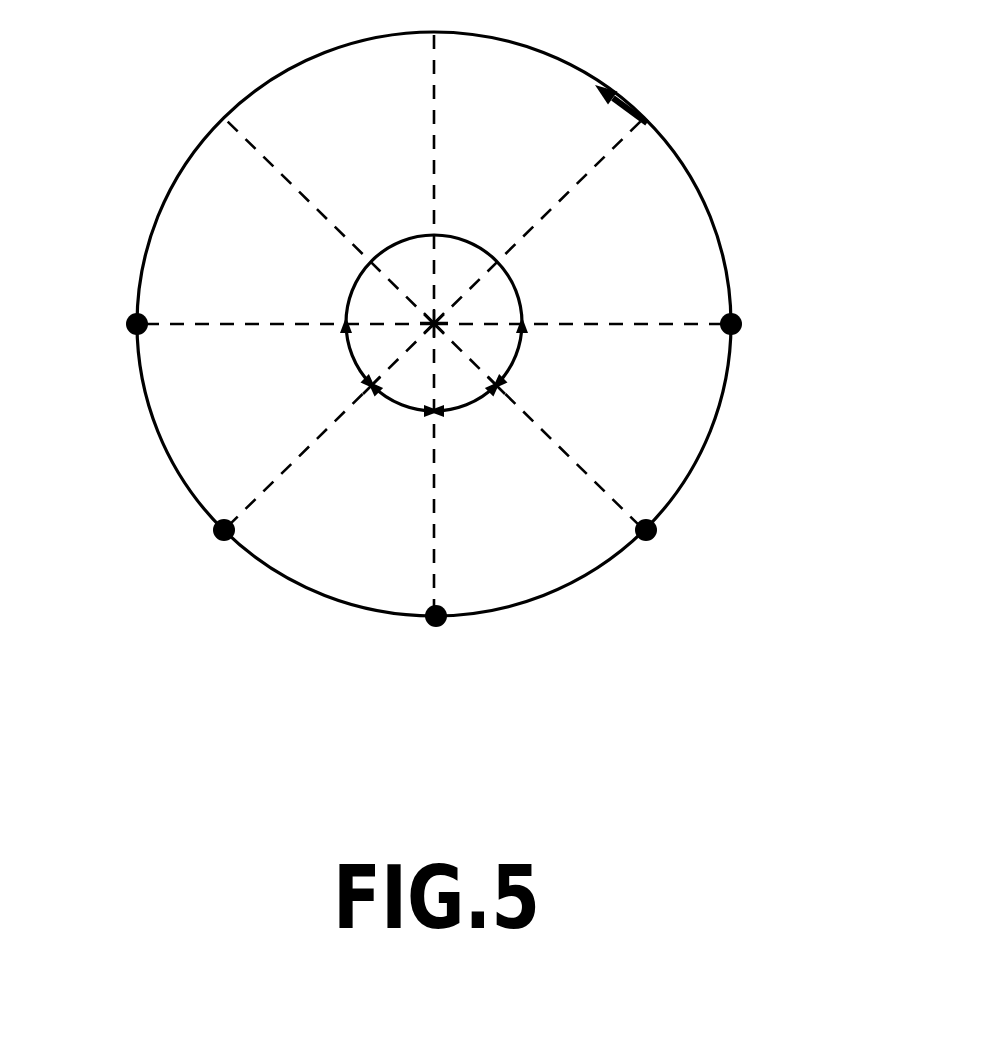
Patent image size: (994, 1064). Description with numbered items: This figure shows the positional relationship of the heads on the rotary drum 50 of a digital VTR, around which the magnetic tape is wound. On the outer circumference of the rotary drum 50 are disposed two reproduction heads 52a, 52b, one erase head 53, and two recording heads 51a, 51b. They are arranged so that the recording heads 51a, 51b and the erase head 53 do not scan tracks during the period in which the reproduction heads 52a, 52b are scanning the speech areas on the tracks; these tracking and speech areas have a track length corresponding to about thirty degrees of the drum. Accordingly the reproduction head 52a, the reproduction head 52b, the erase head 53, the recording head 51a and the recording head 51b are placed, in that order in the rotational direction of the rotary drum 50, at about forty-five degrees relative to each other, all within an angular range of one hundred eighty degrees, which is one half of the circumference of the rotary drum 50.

The rotary drum 50 is at (720, 238).
The recording head 51a is at (222, 540).
The recording head 51b is at (129, 331).
The reproduction head 52a is at (742, 326).
The reproduction head 52b is at (657, 534).
The erase head 53 is at (445, 624).